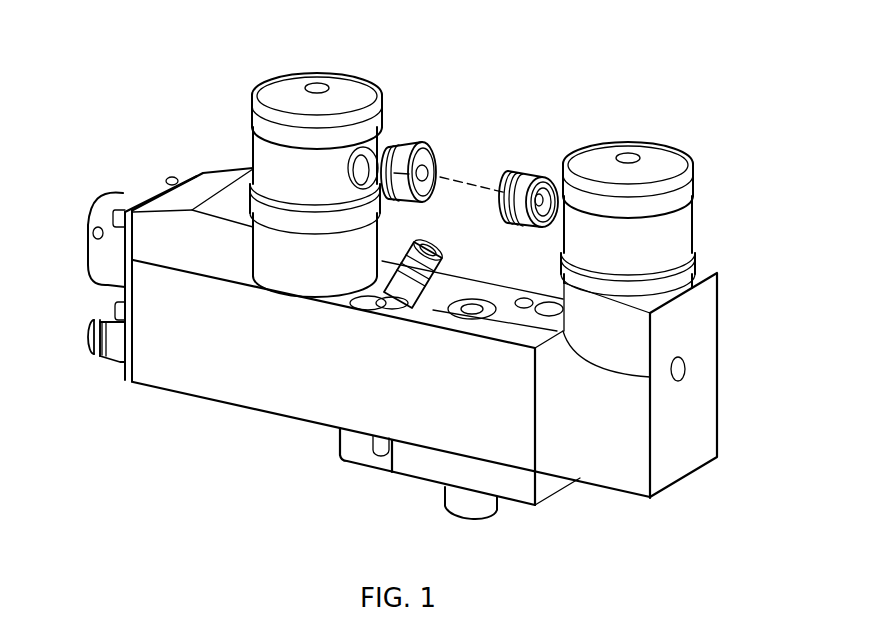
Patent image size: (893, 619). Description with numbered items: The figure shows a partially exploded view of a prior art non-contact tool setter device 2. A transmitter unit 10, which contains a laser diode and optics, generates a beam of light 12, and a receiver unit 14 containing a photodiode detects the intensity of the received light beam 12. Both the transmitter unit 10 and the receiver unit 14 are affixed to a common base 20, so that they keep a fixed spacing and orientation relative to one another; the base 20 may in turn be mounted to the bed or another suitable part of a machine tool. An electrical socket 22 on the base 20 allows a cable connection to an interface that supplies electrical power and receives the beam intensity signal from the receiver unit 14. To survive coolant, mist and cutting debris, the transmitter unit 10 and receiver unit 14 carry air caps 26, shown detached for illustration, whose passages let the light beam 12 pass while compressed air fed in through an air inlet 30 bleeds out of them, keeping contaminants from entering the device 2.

The tool setter device 2 is at (735, 261).
The transmitter unit 10 is at (650, 152).
The beam of light 12 is at (462, 181).
The receiver unit 14 is at (347, 97).
The base 20 is at (700, 425).
The electrical socket 22 is at (122, 194).
The air caps 26 is at (517, 172).
The air inlet 30 is at (87, 352).